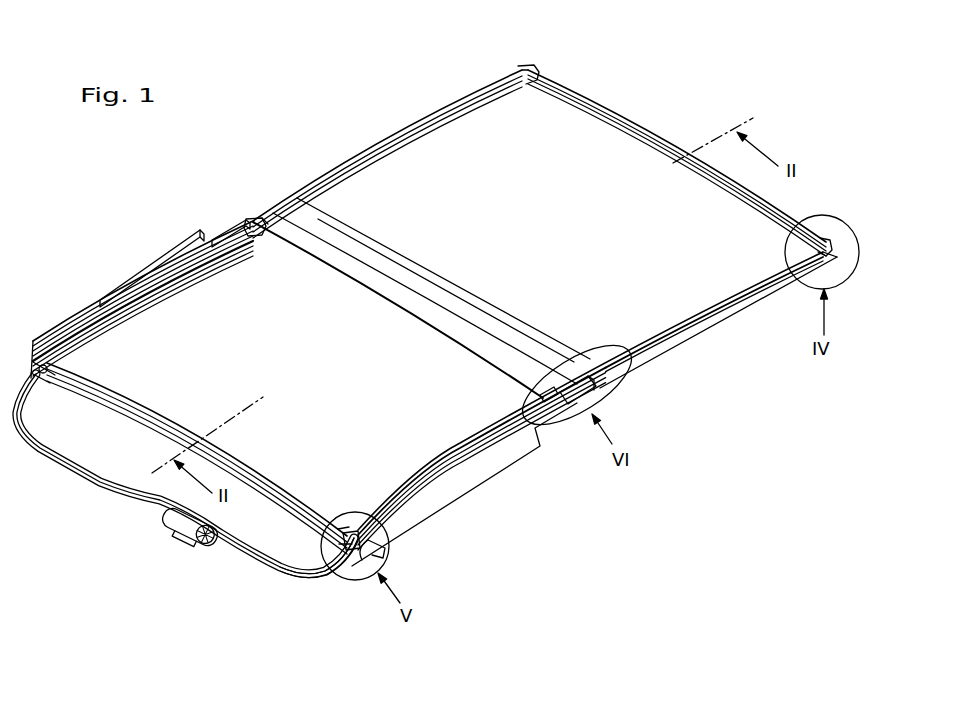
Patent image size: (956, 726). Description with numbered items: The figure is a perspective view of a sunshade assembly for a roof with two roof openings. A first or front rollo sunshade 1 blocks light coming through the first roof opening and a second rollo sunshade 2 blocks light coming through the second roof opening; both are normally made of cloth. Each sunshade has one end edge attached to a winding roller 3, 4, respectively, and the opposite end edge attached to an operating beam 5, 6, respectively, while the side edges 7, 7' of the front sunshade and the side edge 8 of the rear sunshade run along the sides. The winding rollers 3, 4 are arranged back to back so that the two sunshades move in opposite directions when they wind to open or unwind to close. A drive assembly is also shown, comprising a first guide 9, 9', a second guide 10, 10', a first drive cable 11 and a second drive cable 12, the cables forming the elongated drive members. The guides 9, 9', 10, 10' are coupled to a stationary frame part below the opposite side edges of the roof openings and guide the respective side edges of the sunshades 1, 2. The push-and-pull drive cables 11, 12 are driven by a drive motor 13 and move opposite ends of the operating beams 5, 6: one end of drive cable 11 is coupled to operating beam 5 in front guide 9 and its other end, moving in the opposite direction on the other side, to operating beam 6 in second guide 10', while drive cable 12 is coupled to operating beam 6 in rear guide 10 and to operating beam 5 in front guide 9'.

The first rollo sunshade 1 is at (304, 388).
The second rollo sunshade 2 is at (563, 238).
The winding roller 3 is at (268, 208).
The winding roller 4 is at (276, 214).
The operating beam 5 is at (77, 344).
The operating beam 6 is at (530, 83).
The side edge 7 is at (597, 403).
The side edge 7' is at (175, 258).
The side edge 8 is at (410, 130).
The first guide 9 is at (464, 499).
The first guide 9' is at (143, 291).
The second guide 10 is at (718, 340).
The second guide 10' is at (387, 159).
The first drive cable 11 is at (247, 557).
The second drive cable 12 is at (282, 568).
The drive motor 13 is at (183, 521).